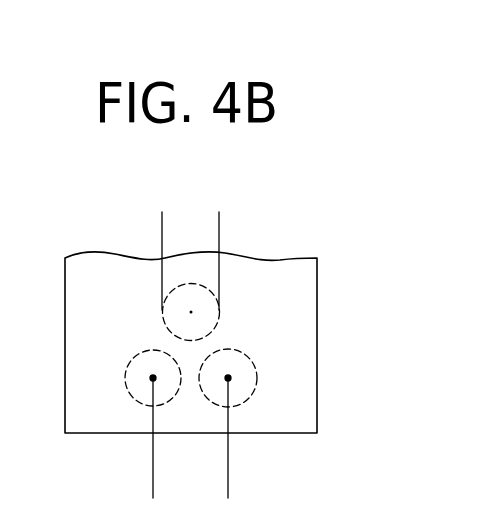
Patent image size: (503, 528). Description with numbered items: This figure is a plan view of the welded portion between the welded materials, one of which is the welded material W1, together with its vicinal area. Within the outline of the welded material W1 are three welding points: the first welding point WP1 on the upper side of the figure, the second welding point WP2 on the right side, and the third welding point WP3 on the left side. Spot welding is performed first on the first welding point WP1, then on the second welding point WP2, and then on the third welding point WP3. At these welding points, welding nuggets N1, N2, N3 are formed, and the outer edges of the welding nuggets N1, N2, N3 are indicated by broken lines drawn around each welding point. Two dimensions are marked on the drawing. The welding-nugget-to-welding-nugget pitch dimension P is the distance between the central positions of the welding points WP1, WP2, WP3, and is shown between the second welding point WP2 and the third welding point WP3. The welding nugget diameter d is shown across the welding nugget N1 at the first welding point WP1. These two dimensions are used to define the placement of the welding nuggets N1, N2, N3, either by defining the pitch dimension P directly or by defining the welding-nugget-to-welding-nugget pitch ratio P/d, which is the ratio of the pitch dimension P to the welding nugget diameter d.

The welded material W1 is at (279, 294).
The first welding point WP1 is at (183, 310).
The second welding point WP2 is at (231, 380).
The third welding point WP3 is at (150, 380).
The welding nugget N1 is at (221, 322).
The welding nugget N2 is at (250, 359).
The welding nugget N3 is at (127, 360).
The welding nugget diameter d is at (207, 226).
The welding-nugget-to-welding-nugget pitch dimension P is at (216, 488).